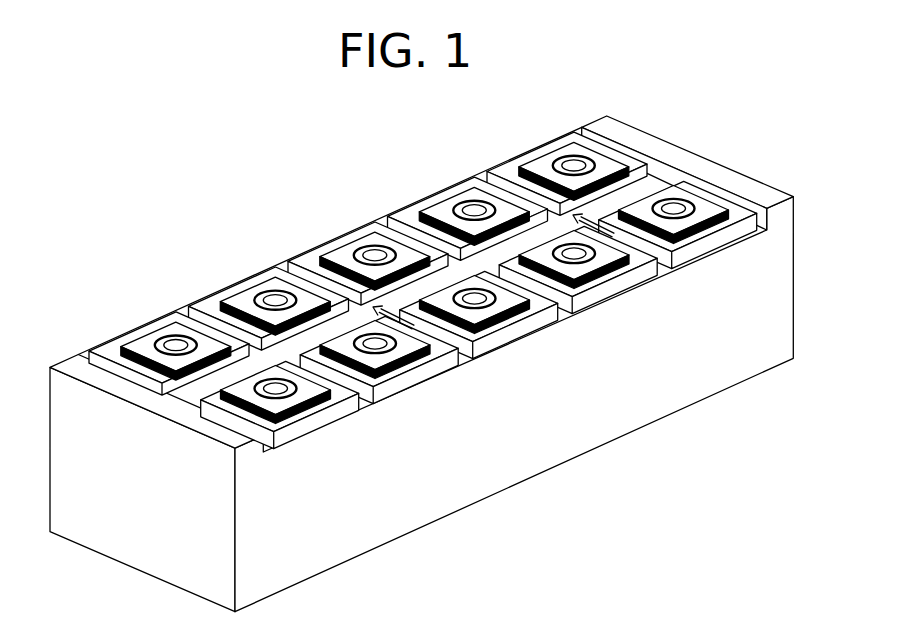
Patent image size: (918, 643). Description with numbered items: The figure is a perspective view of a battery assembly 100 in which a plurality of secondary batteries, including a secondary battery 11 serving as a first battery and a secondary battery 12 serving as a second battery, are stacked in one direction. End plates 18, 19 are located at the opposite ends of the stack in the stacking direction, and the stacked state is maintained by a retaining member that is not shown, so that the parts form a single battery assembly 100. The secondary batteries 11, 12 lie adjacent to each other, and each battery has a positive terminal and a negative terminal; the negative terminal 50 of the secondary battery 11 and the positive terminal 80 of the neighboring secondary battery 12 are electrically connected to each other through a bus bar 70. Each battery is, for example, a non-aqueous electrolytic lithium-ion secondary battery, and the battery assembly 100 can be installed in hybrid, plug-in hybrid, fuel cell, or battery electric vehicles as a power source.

The battery assembly 100 is at (145, 200).
The secondary battery 11 is at (340, 238).
The secondary battery 12 is at (436, 192).
The end plate 18 is at (80, 366).
The end plate 19 is at (611, 136).
The negative terminal 50 is at (480, 304).
The bus bar 70 is at (512, 273).
The positive terminal 80 is at (603, 262).